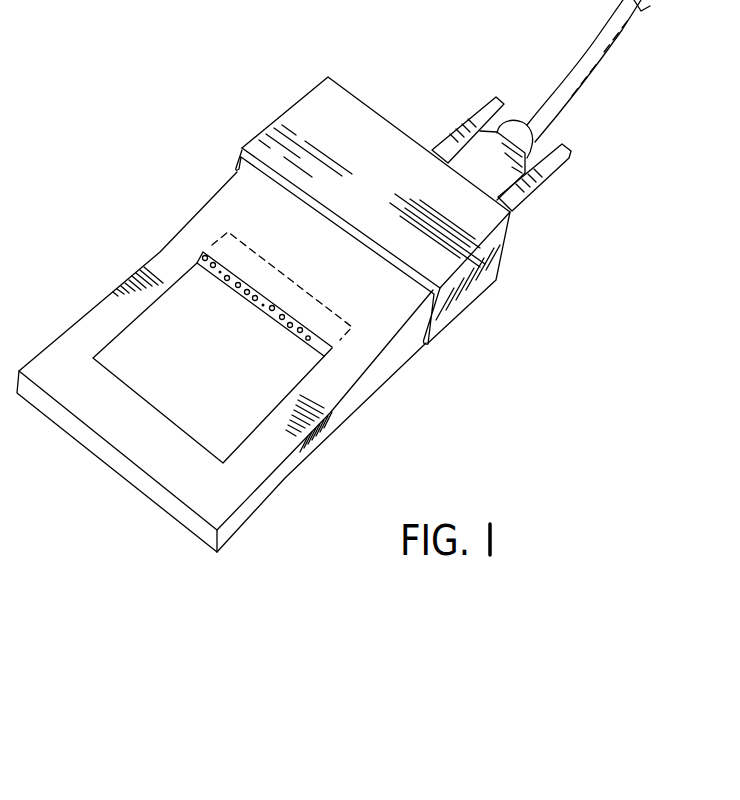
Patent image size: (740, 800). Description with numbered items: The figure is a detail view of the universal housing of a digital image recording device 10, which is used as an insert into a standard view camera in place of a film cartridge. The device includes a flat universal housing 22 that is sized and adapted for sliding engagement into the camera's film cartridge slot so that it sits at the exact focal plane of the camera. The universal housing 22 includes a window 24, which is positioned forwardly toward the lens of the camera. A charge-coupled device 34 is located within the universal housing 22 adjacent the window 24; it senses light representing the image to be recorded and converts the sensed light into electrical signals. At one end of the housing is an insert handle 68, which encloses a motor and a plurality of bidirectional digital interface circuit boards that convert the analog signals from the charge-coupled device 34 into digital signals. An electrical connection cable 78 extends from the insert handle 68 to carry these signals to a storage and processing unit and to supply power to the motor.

The digital image recording device 10 is at (150, 110).
The universal housing 22 is at (103, 297).
The window 24 is at (195, 410).
The charge-coupled device 34 is at (200, 236).
The insert handle 68 is at (287, 110).
The electrical connection cable 78 is at (559, 92).